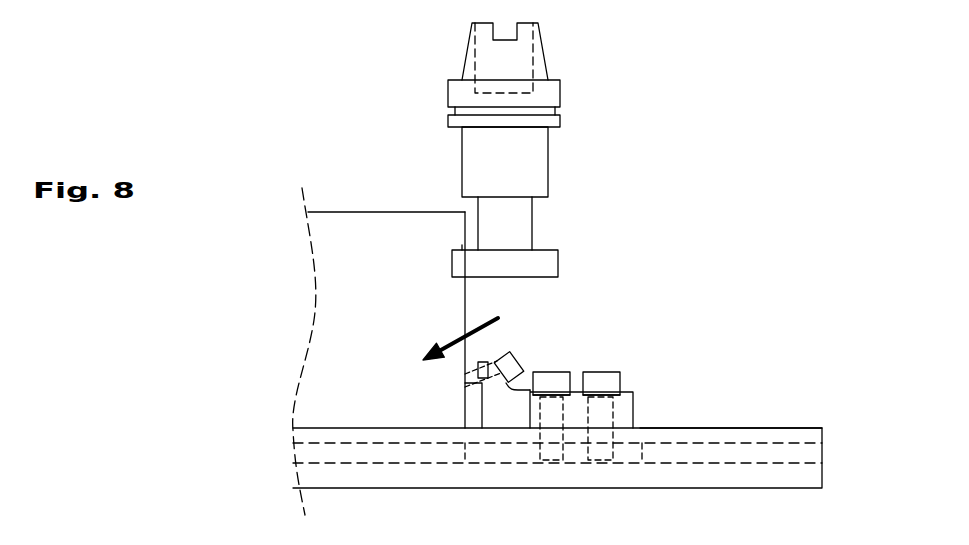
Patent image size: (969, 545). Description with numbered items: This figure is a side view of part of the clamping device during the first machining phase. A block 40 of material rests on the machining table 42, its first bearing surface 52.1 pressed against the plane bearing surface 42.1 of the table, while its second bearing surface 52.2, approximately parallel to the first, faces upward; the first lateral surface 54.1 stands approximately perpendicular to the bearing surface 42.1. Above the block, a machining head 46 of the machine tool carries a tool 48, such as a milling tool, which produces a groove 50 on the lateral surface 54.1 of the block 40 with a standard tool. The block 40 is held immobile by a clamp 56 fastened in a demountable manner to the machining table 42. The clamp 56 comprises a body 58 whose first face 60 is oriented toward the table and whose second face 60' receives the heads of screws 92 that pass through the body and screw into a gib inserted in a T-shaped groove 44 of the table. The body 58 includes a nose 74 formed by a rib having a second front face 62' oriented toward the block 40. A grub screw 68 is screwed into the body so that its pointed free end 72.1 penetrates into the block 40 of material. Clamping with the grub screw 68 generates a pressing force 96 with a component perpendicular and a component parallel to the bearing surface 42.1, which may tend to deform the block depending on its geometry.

The block of material 40 is at (358, 266).
The machining table 42 is at (791, 416).
The bearing surface 42.1 is at (745, 428).
The T-shaped grooves 44 is at (826, 454).
The machining head 46 is at (562, 144).
The tool 48 is at (572, 262).
The groove 50 is at (462, 248).
The first bearing surface 52.1 is at (345, 430).
The second bearing surface 52.2 is at (402, 212).
The first lateral surface 54.1 is at (465, 223).
The clamp 56 is at (630, 349).
The body 58 is at (579, 422).
The first face 60 is at (623, 462).
The second face 60' is at (629, 403).
The second front face 62' is at (381, 358).
The grub screw 68 is at (538, 339).
The pointed free end 72.1 is at (465, 392).
The nose 74 is at (473, 410).
The screw 92 is at (592, 357).
The pressing force 96 is at (478, 320).